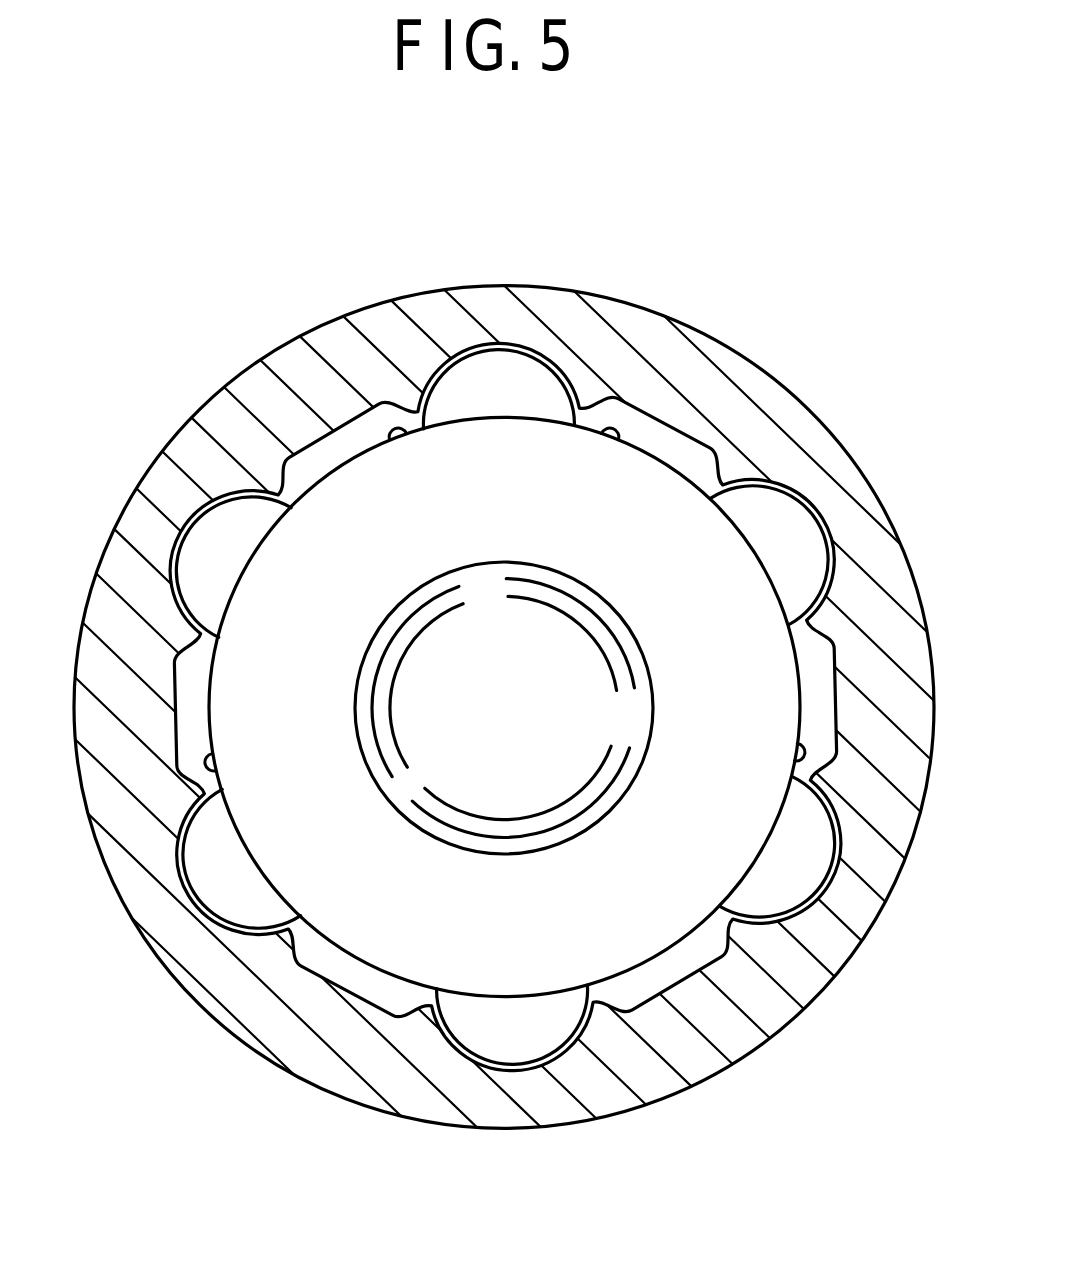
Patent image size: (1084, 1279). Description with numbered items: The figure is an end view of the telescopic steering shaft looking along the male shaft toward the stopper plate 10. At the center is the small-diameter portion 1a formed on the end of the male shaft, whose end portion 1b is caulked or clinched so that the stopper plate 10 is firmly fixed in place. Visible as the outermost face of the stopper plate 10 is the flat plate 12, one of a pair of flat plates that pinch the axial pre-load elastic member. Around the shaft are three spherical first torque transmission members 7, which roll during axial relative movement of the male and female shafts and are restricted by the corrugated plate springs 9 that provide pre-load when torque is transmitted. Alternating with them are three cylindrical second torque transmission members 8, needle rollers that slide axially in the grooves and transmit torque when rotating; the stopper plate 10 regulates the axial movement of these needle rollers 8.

The small-diameter portion 1a is at (505, 747).
The end portion 1b is at (515, 562).
The first torque transmission member 7 is at (502, 386).
The second torque transmission member 8 is at (212, 523).
The plate spring 9 is at (370, 395).
The stopper plate 10 is at (633, 440).
The flat plate 12 is at (655, 495).